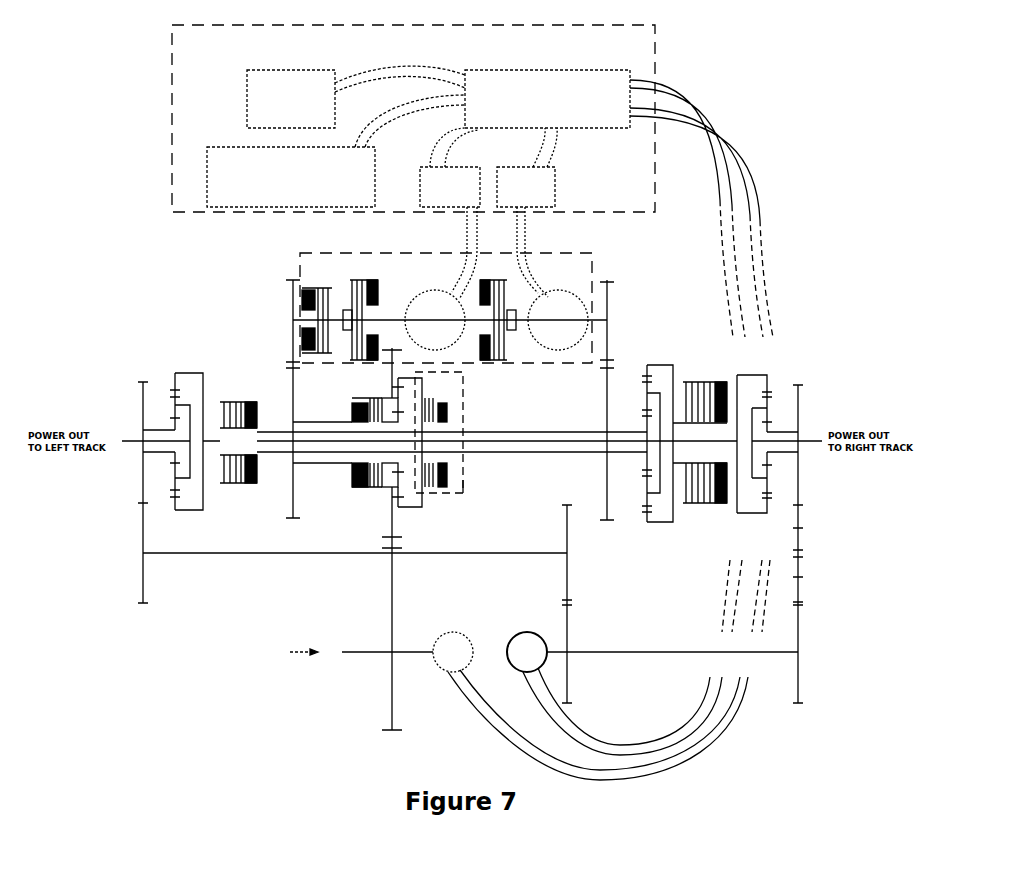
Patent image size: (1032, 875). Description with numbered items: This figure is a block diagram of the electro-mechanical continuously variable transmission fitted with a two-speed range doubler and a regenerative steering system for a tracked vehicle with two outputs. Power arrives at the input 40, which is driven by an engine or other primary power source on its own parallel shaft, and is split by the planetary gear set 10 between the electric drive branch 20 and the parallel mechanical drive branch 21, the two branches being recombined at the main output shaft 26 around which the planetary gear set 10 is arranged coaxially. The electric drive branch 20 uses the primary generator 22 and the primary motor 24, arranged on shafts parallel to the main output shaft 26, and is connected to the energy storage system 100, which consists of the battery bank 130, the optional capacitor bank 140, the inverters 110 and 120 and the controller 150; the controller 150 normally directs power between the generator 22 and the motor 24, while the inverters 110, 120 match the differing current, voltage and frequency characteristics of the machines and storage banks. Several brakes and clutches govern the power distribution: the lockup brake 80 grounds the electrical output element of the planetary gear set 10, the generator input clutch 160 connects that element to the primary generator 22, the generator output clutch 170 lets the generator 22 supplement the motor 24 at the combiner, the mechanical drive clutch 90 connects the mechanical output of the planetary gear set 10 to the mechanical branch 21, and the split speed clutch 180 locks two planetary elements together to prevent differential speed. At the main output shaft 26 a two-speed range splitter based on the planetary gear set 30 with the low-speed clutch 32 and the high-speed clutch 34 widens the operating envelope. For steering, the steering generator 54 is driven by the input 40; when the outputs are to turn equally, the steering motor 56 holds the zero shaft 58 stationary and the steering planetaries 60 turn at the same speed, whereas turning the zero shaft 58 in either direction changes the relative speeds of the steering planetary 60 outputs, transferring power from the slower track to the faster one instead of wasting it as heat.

The planetary gear set 10 is at (425, 495).
The electric drive branch 20 is at (668, 320).
The mechanical drive branch 21 is at (463, 490).
The primary generator 22 is at (433, 295).
The primary motor 24 is at (565, 297).
The main output shaft 26 is at (495, 430).
The planetary gear set 30 is at (662, 522).
The low-speed clutch 32 is at (707, 507).
The high-speed clutch 34 is at (193, 510).
The input 40 is at (368, 653).
The steering generator 54 is at (452, 632).
The steering motor 56 is at (527, 632).
The zero shaft 58 is at (282, 553).
The steering planetaries 60 is at (188, 372).
The lockup brake 80 is at (314, 278).
The mechanical drive clutch 90 is at (451, 402).
The energy storage system 100 is at (655, 205).
The inverter 110 is at (420, 172).
The inverter 120 is at (555, 178).
The battery bank 130 is at (232, 146).
The capacitor bank 140 is at (313, 65).
The controller 150 is at (577, 128).
The generator input clutch 160 is at (362, 278).
The generator output clutch 170 is at (507, 278).
The split speed clutch 180 is at (372, 490).